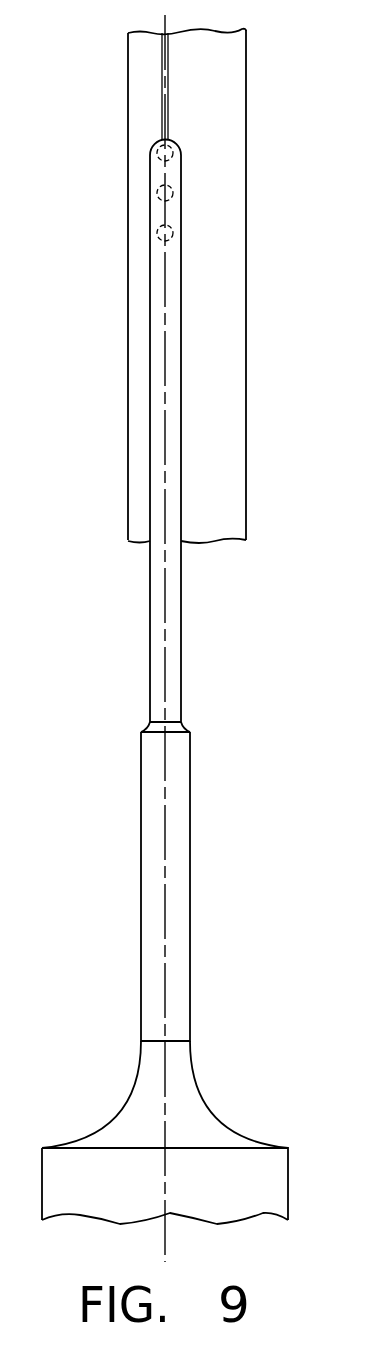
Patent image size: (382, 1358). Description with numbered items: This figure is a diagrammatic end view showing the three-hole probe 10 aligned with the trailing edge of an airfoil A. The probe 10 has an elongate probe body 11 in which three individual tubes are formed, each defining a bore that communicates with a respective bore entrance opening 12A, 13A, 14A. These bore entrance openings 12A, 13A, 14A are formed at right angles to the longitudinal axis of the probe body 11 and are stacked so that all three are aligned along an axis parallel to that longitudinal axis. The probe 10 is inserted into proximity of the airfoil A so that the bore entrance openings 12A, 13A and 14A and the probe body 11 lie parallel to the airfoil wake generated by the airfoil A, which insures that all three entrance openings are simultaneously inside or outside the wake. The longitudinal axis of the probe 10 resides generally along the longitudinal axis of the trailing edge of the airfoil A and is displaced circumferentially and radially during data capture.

The 3-hole probe 10 is at (182, 626).
The probe body 11 is at (180, 650).
The bore entrance opening 12A is at (158, 151).
The bore entrance opening 13A is at (158, 192).
The bore entrance opening 14A is at (158, 232).
The airfoil A is at (222, 53).